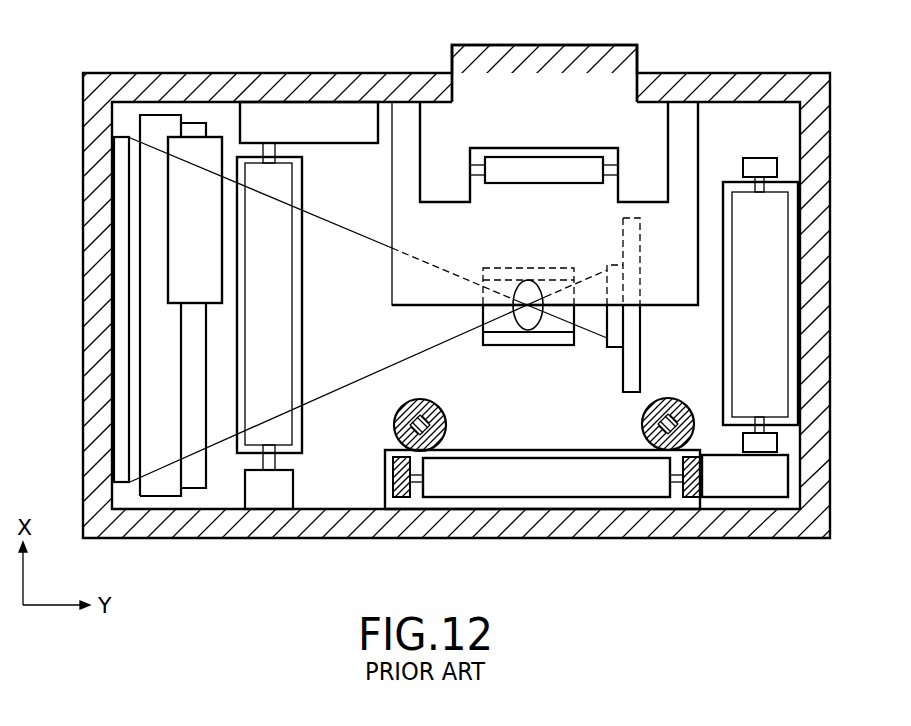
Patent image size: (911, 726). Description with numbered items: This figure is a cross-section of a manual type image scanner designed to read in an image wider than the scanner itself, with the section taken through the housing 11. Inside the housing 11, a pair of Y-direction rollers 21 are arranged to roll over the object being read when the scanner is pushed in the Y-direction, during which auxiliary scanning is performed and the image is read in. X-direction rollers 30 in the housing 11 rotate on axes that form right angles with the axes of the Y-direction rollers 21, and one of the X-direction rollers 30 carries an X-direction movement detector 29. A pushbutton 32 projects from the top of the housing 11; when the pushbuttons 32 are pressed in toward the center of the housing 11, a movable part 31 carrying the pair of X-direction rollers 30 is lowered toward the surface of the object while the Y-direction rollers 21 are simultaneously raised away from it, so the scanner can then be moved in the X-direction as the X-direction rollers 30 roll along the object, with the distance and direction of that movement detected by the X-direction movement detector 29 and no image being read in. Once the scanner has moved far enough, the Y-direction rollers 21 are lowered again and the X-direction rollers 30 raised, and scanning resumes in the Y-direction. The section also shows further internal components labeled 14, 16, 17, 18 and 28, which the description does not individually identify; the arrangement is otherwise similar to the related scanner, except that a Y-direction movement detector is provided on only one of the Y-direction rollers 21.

The housing 11 is at (337, 525).
The cylinder body 14 is at (157, 127).
The piston rod 16 is at (192, 478).
The counterweight block 17 is at (187, 195).
The side plate 18 is at (122, 343).
The Y-direction rollers 21 is at (765, 322).
The mounting block 28 is at (305, 122).
The X-direction movement detector 29 is at (752, 478).
The X-direction rollers 30 is at (567, 483).
The movable part 31 is at (676, 245).
The pushbuttons 32 is at (610, 58).